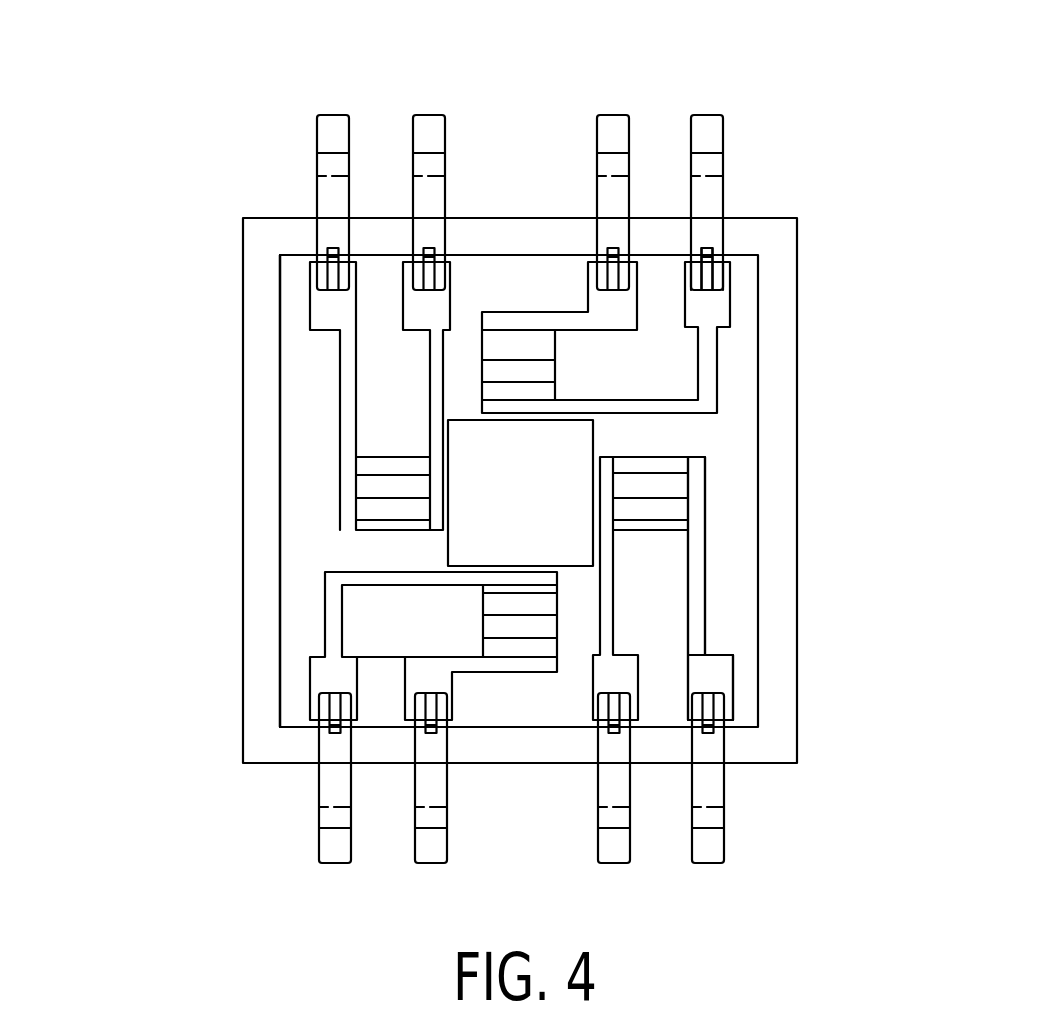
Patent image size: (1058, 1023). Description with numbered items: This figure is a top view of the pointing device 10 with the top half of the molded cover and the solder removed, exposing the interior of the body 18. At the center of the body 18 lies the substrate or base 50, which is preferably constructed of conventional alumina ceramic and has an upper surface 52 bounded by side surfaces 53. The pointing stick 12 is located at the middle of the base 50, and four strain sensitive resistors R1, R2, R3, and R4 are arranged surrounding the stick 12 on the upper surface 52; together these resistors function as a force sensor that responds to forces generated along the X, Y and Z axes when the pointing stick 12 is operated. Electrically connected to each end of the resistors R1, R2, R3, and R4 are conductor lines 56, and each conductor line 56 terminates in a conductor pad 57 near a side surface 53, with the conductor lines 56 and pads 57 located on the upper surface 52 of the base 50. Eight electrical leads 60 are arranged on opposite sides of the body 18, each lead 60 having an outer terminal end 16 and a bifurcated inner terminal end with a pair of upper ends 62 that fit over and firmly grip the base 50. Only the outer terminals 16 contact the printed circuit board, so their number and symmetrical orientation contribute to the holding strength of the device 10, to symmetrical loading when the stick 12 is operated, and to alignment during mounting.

The pointing device 10 is at (160, 141).
The pointing stick 12 is at (438, 549).
The outer terminal ends 16 is at (570, 451).
The body 18 is at (266, 210).
The base 50 is at (270, 390).
The upper surface 52 is at (302, 480).
The side surfaces 53 is at (278, 305).
The conductor lines 56 is at (698, 578).
The conductor pad 57 is at (728, 673).
The electrical lead 60 is at (735, 186).
The upper ends 62 is at (697, 280).
The strain sensitive resistor R1 is at (548, 370).
The strain sensitive resistor R2 is at (493, 625).
The strain sensitive resistor R3 is at (663, 460).
The strain sensitive resistor R4 is at (388, 462).